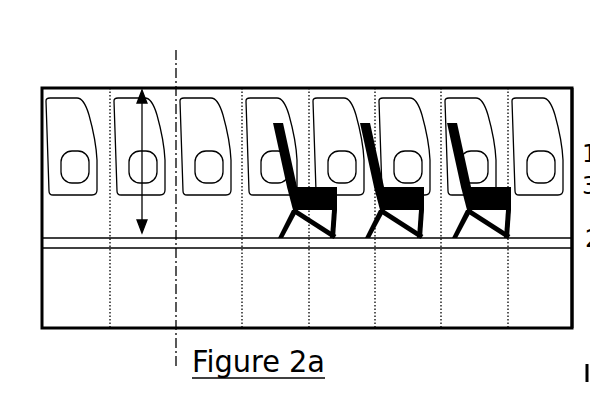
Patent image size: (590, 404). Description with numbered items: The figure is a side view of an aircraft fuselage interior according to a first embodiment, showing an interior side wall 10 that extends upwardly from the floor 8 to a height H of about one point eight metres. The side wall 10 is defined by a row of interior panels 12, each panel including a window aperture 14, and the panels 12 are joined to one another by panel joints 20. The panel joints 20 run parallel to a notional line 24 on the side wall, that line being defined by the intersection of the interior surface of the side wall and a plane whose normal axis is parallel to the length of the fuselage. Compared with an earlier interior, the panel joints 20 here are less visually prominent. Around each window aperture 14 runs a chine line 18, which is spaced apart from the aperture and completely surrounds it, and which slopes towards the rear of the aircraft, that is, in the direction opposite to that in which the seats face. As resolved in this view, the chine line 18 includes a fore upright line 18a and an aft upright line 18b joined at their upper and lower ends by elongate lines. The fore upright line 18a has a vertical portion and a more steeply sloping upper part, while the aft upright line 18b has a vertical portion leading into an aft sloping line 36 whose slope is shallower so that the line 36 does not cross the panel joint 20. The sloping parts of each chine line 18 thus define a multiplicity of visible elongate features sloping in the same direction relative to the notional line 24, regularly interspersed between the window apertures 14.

The floor 8 is at (100, 243).
The interior side wall 10 is at (208, 120).
The interior panel 12 is at (497, 97).
The window aperture 14 is at (545, 165).
The chine line 18 is at (258, 100).
The fore upright line 18a is at (93, 143).
The aft upright line 18b is at (63, 110).
The panel joint 20 is at (107, 117).
The notional line 24 is at (170, 338).
The aft sloping line 36 is at (589, 53).
The height H is at (132, 108).